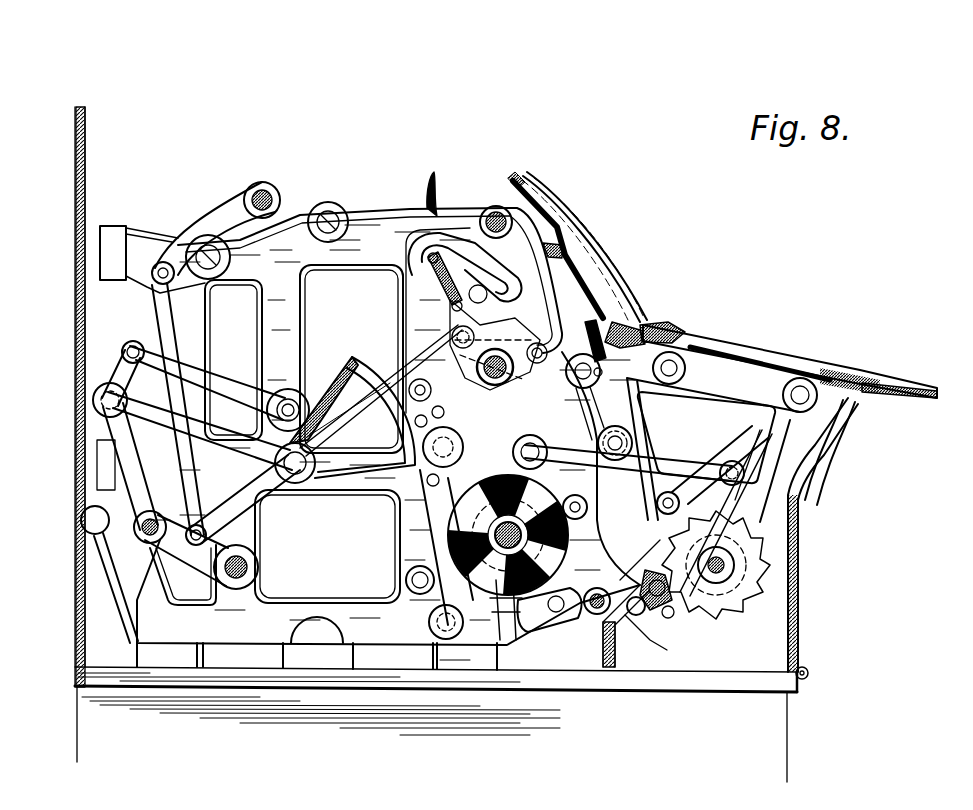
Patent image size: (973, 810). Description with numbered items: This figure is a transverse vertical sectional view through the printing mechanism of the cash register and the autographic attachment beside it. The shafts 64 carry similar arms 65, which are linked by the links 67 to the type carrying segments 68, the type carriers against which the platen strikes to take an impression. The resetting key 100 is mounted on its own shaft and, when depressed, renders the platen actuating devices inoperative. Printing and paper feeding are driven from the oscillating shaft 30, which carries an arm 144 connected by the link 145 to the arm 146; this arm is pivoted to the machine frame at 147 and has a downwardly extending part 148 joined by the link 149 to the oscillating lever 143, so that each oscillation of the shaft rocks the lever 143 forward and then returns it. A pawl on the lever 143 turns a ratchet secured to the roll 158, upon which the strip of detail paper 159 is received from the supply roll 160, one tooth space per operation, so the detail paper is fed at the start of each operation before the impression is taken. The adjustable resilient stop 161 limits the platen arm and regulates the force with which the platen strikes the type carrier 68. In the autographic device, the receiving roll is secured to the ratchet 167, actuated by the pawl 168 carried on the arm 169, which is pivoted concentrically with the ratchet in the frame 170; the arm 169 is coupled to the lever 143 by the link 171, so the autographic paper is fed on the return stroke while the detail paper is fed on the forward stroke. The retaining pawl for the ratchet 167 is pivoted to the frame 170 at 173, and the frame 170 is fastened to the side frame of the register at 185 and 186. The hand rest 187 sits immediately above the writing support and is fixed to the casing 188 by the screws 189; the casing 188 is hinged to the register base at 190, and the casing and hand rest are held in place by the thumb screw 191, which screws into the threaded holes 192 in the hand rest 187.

The shaft 30 is at (258, 566).
The shafts 64 is at (272, 198).
The arms 65 is at (208, 222).
The links 67 is at (170, 328).
The type carrying segments 68 is at (250, 503).
The resetting key 100 is at (437, 200).
The oscillating lever 143 is at (450, 278).
The arm 144 is at (167, 607).
The link 145 is at (108, 423).
The arm 146 is at (236, 394).
The pivot 147 is at (323, 373).
The downwardly extending part 148 is at (278, 450).
The link 149 is at (390, 385).
The roll 158 is at (512, 360).
The detail paper 159 is at (457, 495).
The supply roll 160 is at (458, 520).
The adjustable resilient stop 161 is at (520, 620).
The ratchet 167 is at (755, 565).
The pawl 168 is at (745, 512).
The arm 169 is at (780, 483).
The frame 170 is at (835, 428).
The link 171 is at (675, 472).
The pivot of retaining pawl 173 is at (644, 614).
The securing point 185 is at (640, 445).
The securing point 186 is at (583, 389).
The hand rest 187 is at (800, 357).
The casing 188 is at (800, 535).
The screws 189 is at (877, 378).
The hinge 190 is at (810, 673).
The thumb screw 191 is at (640, 312).
The threaded holes 192 is at (654, 324).